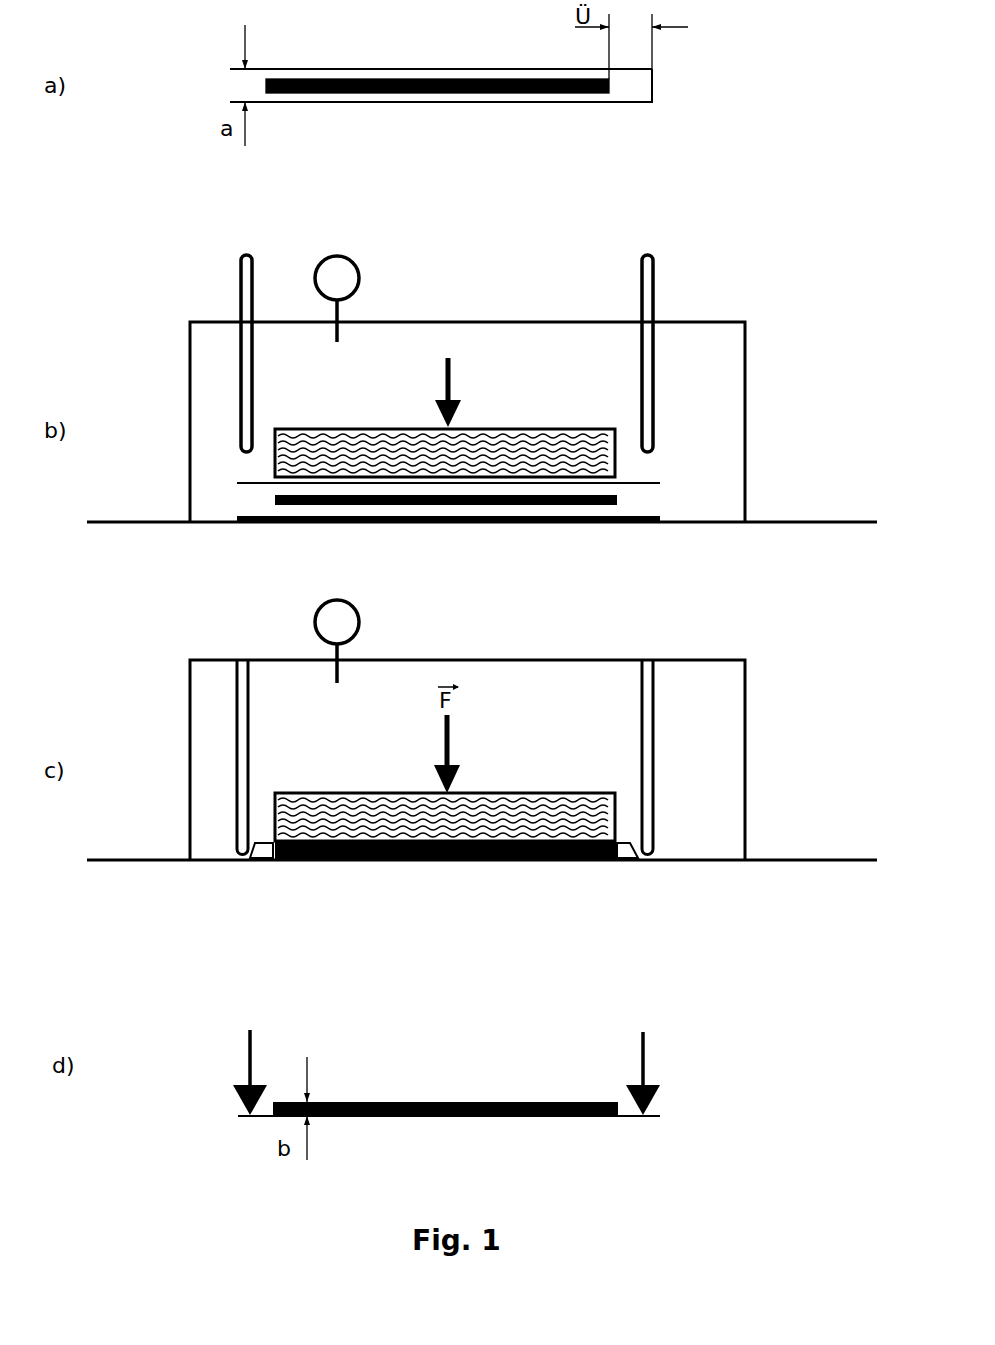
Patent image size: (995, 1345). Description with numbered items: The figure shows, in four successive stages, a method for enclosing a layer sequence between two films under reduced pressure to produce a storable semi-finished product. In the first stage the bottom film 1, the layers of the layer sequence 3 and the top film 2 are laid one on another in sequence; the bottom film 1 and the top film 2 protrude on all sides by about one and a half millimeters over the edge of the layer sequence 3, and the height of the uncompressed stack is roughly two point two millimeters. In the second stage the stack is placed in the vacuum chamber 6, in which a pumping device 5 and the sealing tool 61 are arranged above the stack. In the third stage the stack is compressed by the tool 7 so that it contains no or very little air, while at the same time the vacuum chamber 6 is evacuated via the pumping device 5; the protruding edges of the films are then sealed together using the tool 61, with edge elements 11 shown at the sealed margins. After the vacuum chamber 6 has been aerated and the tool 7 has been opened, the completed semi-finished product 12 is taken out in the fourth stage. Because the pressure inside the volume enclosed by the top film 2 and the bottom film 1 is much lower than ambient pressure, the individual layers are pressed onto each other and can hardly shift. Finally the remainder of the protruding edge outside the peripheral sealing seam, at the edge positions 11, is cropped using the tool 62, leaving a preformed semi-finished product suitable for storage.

The bottom film 1 is at (307, 69).
The top film 2 is at (575, 102).
The layer sequence 3 is at (392, 79).
The pumping device 5 is at (355, 273).
The vacuum chamber 6 is at (513, 358).
The tool 7 is at (617, 458).
The edge clamping elements 11 is at (240, 862).
The semi-finished product 12 is at (518, 1132).
The tool 61 is at (243, 293).
The tool 62 is at (248, 1060).